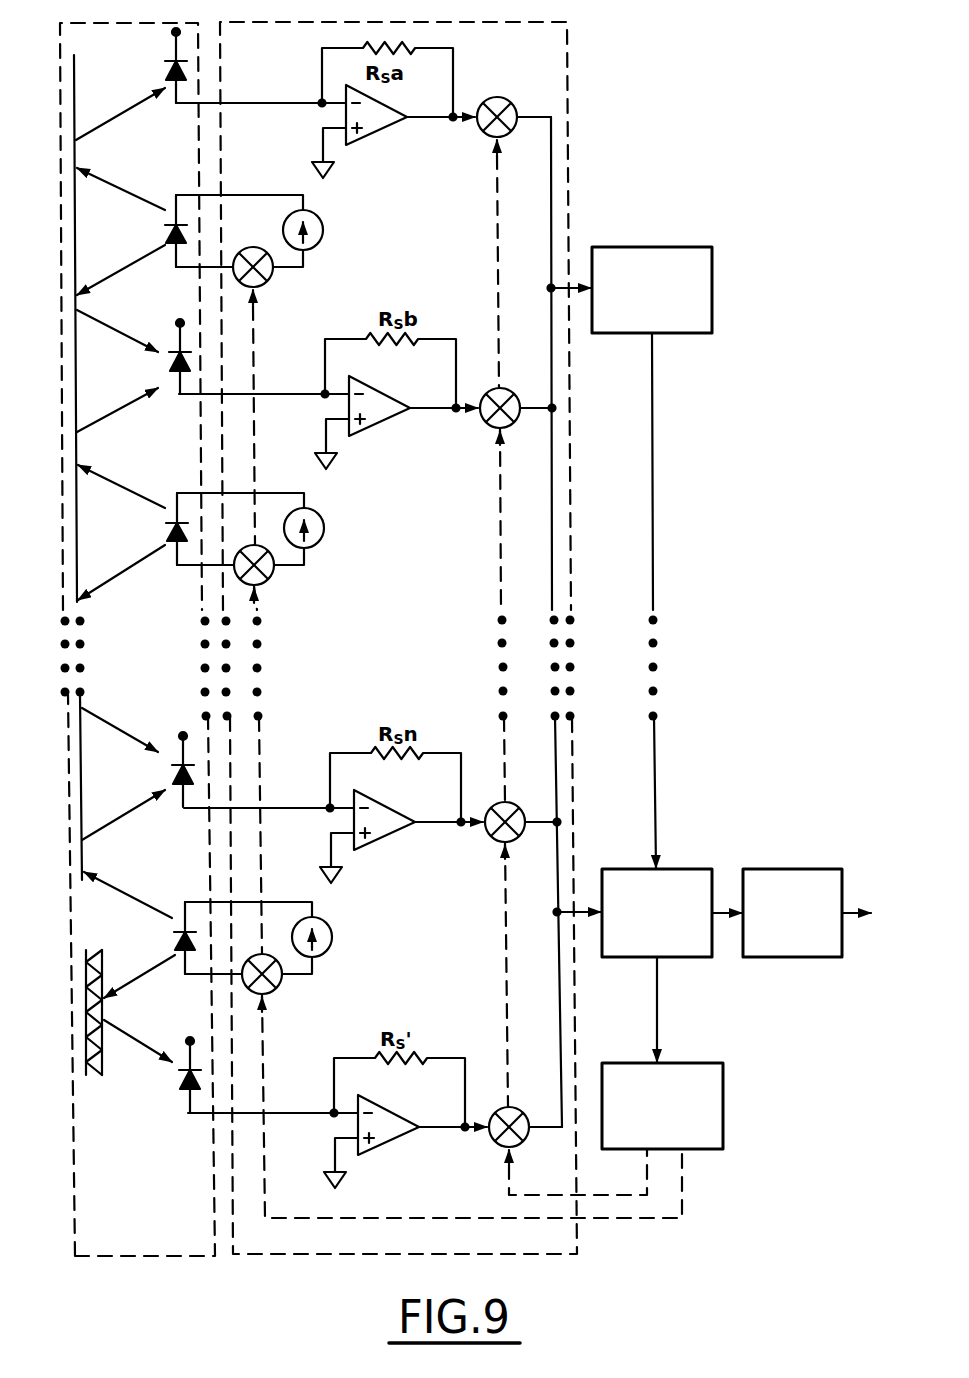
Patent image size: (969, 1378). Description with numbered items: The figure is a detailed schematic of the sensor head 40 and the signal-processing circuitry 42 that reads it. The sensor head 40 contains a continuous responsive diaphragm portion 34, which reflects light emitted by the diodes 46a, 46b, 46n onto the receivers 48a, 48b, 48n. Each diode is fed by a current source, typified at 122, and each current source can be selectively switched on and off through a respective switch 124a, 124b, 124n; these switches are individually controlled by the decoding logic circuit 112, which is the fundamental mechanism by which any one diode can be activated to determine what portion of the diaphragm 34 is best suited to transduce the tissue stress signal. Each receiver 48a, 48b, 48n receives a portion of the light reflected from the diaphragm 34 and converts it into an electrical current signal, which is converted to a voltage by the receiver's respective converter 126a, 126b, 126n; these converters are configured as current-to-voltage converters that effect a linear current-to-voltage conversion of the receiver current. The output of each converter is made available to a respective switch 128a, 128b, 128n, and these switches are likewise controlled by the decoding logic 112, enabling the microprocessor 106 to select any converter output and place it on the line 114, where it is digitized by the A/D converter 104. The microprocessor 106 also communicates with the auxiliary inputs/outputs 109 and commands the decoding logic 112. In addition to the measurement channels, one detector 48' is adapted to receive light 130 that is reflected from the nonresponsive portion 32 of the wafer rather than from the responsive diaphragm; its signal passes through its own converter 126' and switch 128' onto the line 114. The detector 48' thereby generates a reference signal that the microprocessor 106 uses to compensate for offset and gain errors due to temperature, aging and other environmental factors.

The nonresponsive portion 32 is at (88, 1015).
The continuous responsive diaphragm portion 34 is at (76, 478).
The sensor head 40 is at (63, 512).
The signal processing circuit 42 is at (574, 541).
The diode 46a is at (168, 255).
The diode 46b is at (210, 551).
The diode 46n is at (222, 957).
The receiver 48a is at (166, 100).
The receiver 48b is at (156, 382).
The receiver 48n is at (161, 790).
The detector 48' is at (172, 1095).
The A/D converter 104 is at (652, 247).
The microprocessor 106 is at (695, 868).
The auxiliary inputs/outputs 109 is at (785, 868).
The decoding logic circuit 112 is at (692, 1062).
The line 114 is at (557, 286).
The current source 122 is at (323, 232).
The switch 124a is at (268, 282).
The switch 124b is at (291, 574).
The switch 124n is at (305, 983).
The converter 126a is at (370, 138).
The converter 126b is at (401, 421).
The converter 126n is at (405, 831).
The amplifier 126' is at (396, 1135).
The switch 128a is at (481, 137).
The switch 128b is at (460, 443).
The switch 128n is at (457, 854).
The multiplier 128' is at (484, 1141).
The light 130 is at (134, 1043).